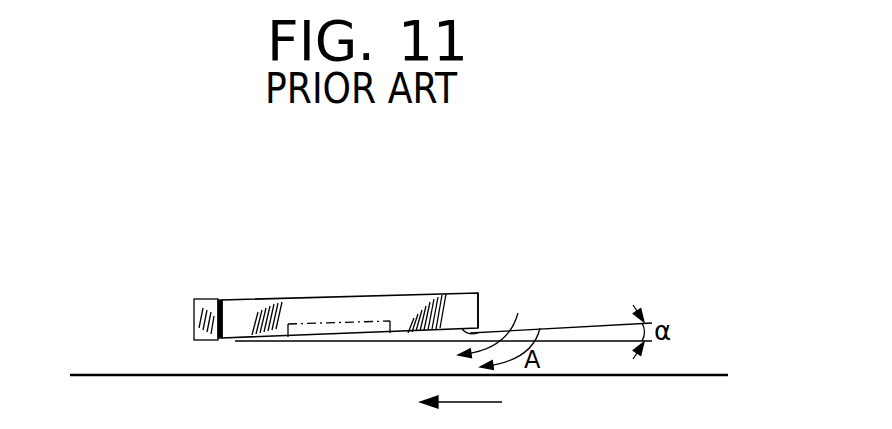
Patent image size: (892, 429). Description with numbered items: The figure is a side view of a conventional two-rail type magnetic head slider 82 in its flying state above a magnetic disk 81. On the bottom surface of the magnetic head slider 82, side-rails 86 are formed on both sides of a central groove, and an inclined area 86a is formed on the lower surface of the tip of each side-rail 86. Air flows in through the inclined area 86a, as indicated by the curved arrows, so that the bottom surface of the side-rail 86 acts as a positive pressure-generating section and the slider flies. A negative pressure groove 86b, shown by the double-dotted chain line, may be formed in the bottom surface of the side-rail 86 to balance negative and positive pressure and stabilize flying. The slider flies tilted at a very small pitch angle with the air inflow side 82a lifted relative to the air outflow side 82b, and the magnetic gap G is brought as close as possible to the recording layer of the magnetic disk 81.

The magnetic disk 81 is at (110, 375).
The magnetic head slider 82 is at (388, 284).
The air inflow side 82a is at (492, 283).
The air outflow side 82b is at (178, 307).
The side-rail 86 is at (262, 316).
The inclined area 86a is at (470, 331).
The negative pressure groove 86b is at (326, 323).
The magnetic gap G is at (236, 313).